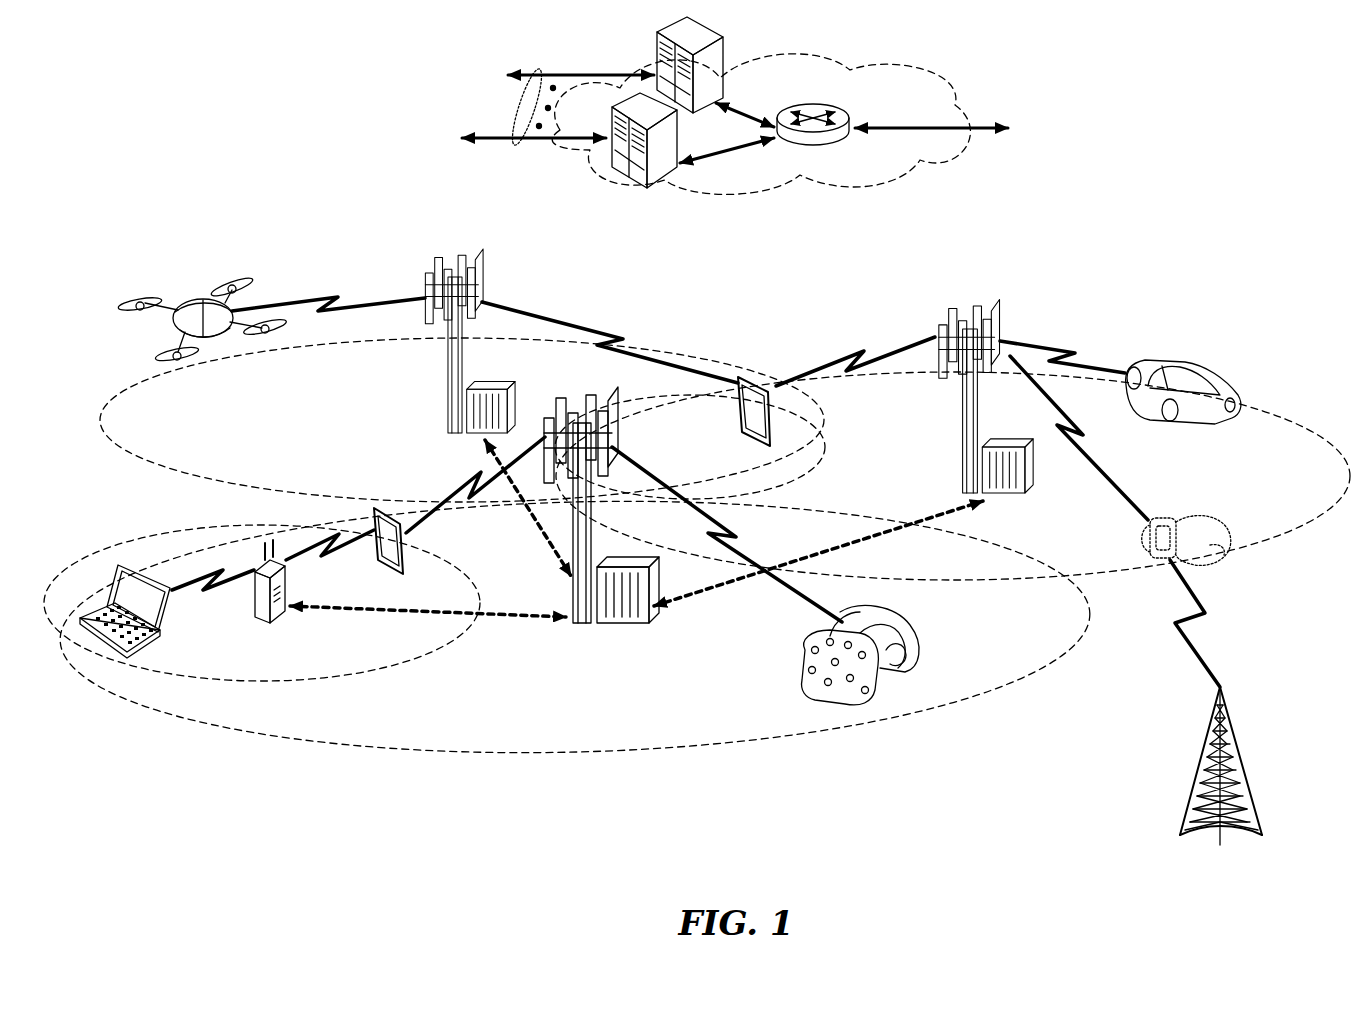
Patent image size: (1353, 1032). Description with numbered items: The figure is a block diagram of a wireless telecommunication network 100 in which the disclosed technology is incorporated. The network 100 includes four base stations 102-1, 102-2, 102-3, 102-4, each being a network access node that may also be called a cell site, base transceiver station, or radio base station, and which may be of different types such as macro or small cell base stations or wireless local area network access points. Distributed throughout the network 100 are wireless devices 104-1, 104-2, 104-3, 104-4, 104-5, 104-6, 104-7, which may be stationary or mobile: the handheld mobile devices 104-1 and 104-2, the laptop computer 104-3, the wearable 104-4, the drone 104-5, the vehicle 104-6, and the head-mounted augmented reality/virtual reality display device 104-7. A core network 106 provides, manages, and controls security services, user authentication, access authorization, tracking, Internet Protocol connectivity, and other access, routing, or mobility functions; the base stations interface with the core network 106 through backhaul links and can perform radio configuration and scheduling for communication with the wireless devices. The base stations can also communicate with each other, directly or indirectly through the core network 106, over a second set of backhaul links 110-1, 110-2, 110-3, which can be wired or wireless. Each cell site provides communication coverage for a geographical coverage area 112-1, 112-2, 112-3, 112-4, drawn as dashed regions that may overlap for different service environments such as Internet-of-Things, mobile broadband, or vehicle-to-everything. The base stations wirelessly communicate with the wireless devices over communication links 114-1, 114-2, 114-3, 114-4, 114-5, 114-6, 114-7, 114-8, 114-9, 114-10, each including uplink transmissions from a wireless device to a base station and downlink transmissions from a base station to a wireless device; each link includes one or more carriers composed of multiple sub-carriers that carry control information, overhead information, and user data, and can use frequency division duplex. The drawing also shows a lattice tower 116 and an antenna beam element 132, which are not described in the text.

The wireless telecommunication network 100 is at (1256, 117).
The base station 102-1 is at (584, 630).
The base station 102-2 is at (448, 380).
The base station 102-3 is at (963, 415).
The base station 102-4 is at (252, 615).
The wireless device 104-1 is at (406, 530).
The wireless device 104-2 is at (735, 420).
The wireless device 104-3 is at (105, 650).
The wireless device 104-4 is at (1165, 518).
The wireless device 104-5 is at (215, 345).
The wireless device 104-6 is at (1200, 372).
The wireless device 104-7 is at (905, 640).
The core network 106 is at (846, 198).
The backhaul link 110-1 is at (330, 615).
The backhaul link 110-2 is at (885, 540).
The backhaul link 110-3 is at (545, 540).
The geographical coverage area 112-1 is at (512, 758).
The geographical coverage area 112-2 is at (390, 678).
The geographical coverage area 112-3 is at (160, 495).
The geographical coverage area 112-4 is at (1258, 412).
The communication link 114-1 is at (732, 545).
The communication link 114-2 is at (470, 488).
The communication link 114-3 is at (215, 590).
The communication link 114-4 is at (330, 560).
The communication link 114-5 is at (330, 300).
The communication link 114-6 is at (605, 340).
The communication link 114-7 is at (860, 355).
The communication link 114-8 is at (1085, 450).
The communication link 114-9 is at (1063, 350).
The communication link 114-10 is at (1210, 625).
The transmission tower 116 is at (1240, 725).
The antenna beam 132 is at (514, 157).